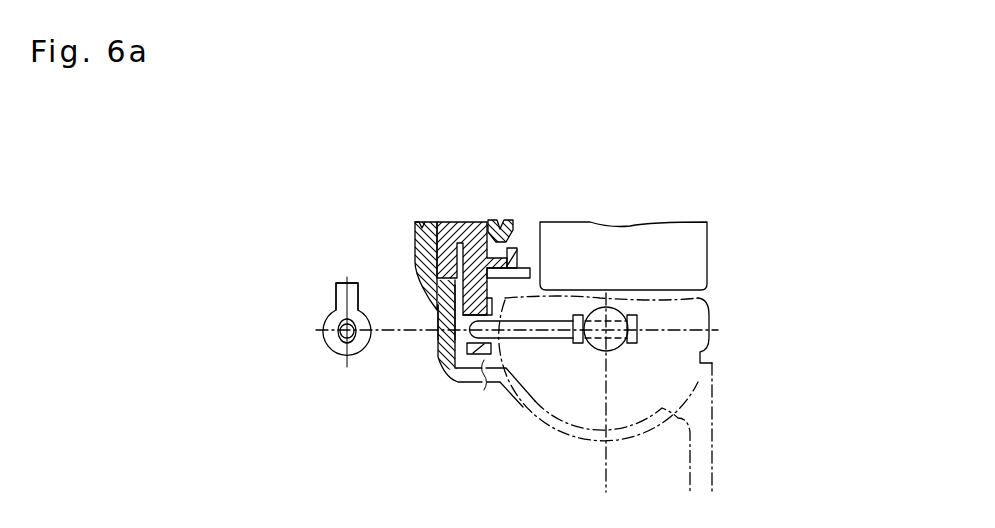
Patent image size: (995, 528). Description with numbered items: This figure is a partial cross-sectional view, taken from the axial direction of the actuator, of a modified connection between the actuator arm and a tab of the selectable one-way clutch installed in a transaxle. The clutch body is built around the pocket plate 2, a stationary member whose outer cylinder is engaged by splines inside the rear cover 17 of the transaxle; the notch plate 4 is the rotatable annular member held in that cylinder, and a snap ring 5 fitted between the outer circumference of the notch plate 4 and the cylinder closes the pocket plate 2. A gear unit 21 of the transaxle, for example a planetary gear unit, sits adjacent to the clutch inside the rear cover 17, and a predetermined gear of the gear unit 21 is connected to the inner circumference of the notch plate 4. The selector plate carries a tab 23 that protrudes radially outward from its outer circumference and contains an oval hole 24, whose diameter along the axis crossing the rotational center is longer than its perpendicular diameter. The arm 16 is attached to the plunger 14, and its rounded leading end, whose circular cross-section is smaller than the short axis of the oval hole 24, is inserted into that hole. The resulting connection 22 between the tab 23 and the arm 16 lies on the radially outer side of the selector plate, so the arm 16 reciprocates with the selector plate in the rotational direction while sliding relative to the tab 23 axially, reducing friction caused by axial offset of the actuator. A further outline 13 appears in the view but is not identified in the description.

The pocket plate 2 is at (450, 220).
The notch plate 4 is at (502, 226).
The snap ring 5 is at (517, 250).
The housing 13 is at (703, 347).
The plunger 14 is at (612, 311).
The arm 16 is at (348, 333).
The rear cover 17 is at (415, 247).
The gear unit 21 is at (683, 233).
The connection 22 is at (305, 315).
The tab 23 is at (336, 292).
The oval hole 24 is at (349, 345).